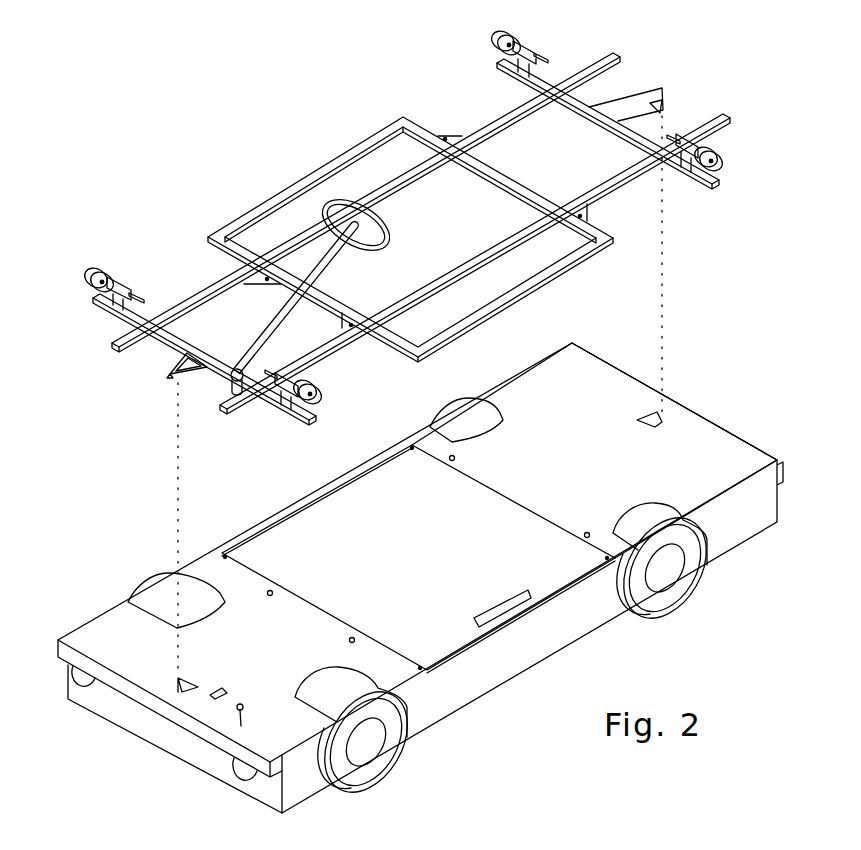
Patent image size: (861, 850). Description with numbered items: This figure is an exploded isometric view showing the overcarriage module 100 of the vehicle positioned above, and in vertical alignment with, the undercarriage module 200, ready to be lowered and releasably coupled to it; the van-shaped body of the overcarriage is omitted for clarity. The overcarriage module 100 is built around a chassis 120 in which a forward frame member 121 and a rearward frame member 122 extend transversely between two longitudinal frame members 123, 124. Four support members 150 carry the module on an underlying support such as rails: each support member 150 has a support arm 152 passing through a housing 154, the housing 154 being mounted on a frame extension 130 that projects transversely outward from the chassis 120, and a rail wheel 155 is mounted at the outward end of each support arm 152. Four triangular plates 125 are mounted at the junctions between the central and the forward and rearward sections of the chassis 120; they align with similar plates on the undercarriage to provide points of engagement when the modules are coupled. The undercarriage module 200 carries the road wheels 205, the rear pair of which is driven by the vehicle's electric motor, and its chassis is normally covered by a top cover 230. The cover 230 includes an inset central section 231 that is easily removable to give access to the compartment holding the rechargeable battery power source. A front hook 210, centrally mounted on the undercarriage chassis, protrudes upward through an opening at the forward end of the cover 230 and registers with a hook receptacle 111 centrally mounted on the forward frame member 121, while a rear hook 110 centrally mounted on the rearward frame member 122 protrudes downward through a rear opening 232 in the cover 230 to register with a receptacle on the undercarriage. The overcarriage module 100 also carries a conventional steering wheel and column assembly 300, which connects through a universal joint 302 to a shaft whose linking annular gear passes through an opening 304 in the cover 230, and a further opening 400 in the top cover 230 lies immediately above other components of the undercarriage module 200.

The overcarriage module 100 is at (259, 142).
The rear hook 110 is at (664, 106).
The hook receptacle 111 is at (178, 378).
The chassis 120 is at (285, 178).
The forward frame member 121 is at (170, 363).
The rearward frame member 122 is at (591, 101).
The longitudinal frame member 123 is at (397, 190).
The longitudinal frame member 124 is at (411, 296).
The triangular plate 125 is at (461, 130).
The frame extension 130 is at (505, 64).
The support member 150 is at (488, 32).
The support arm 152 is at (143, 300).
The housing 154 is at (123, 285).
The rail wheel 155 is at (88, 276).
The undercarriage module 200 is at (295, 471).
The road wheel 205 is at (672, 600).
The front hook 210 is at (180, 689).
The top cover 230 is at (581, 461).
The inset central section 231 is at (434, 564).
The rear opening 232 is at (664, 418).
The steering wheel and column assembly 300 is at (333, 270).
The universal joint 302 is at (234, 390).
The opening 304 is at (240, 728).
The opening 400 is at (249, 673).